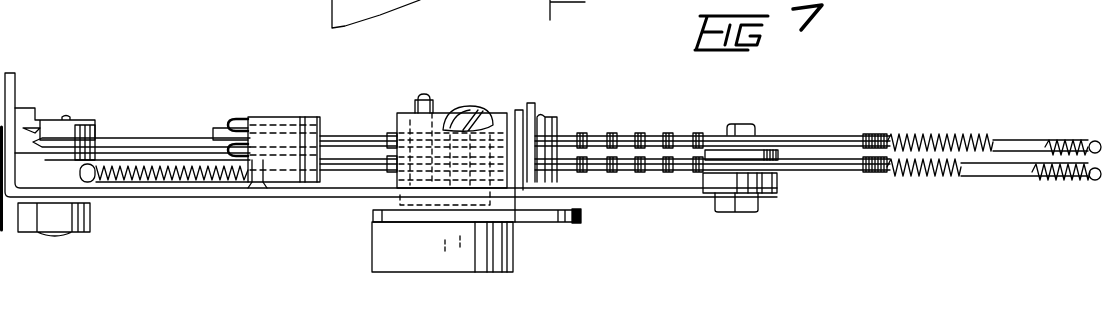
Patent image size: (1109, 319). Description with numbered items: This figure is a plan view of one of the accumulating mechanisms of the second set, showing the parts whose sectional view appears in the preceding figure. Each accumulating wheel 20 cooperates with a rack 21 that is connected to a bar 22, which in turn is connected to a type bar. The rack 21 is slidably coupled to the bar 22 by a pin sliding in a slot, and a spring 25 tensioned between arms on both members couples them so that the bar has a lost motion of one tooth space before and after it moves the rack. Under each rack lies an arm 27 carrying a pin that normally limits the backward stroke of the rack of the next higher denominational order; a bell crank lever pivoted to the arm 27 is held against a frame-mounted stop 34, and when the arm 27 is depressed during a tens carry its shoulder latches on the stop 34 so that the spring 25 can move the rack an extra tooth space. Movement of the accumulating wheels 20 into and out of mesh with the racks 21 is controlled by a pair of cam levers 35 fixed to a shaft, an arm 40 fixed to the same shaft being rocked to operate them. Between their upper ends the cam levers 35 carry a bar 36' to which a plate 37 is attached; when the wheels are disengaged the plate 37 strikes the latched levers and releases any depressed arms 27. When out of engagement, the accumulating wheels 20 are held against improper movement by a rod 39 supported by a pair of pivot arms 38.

The accumulating wheel 20 is at (394, 137).
The rack 21 is at (826, 141).
The bar 22 is at (836, 174).
The spring 25 is at (950, 126).
The arm 27 is at (167, 150).
The stop 34 is at (310, 128).
The cam lever 35 is at (583, 215).
The bar 36' is at (536, 147).
The plate 37 is at (401, 113).
The pivot arm 38 is at (363, 178).
The rod 39 is at (424, 96).
The arm 40 is at (330, 12).